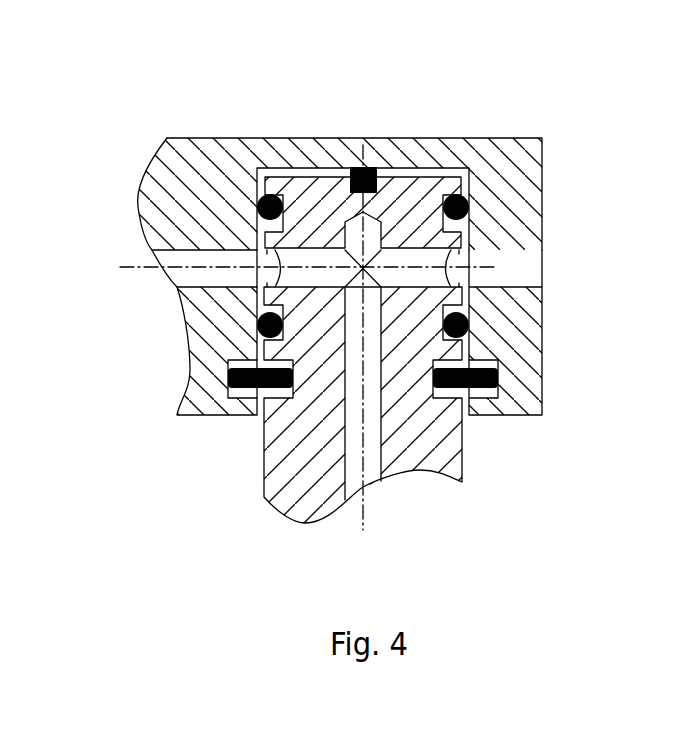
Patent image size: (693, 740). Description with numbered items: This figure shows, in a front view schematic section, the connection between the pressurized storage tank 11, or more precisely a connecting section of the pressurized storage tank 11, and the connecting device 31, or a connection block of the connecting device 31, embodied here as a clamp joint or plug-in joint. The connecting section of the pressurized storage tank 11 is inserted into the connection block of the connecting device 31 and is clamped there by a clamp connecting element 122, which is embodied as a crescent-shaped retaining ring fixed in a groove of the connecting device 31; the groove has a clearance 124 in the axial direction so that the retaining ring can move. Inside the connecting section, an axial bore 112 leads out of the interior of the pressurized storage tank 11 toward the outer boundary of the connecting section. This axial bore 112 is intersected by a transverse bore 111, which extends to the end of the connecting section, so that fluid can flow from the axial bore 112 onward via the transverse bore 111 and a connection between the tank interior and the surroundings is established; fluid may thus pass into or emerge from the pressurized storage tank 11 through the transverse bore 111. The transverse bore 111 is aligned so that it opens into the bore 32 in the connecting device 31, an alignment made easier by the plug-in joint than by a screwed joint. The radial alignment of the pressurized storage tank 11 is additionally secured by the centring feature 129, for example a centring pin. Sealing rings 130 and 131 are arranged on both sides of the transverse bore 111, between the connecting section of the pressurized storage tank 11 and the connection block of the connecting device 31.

The pressurized storage tank 11 is at (333, 197).
The connecting device 31 is at (205, 182).
The bore 32 is at (200, 277).
The transverse bore 111 is at (428, 277).
The axial bore 112 is at (371, 457).
The clamp connecting element 122 is at (228, 390).
The clearance 124 is at (485, 397).
The centring feature 129 is at (377, 168).
The sealing ring 130 is at (470, 210).
The sealing ring 131 is at (470, 322).